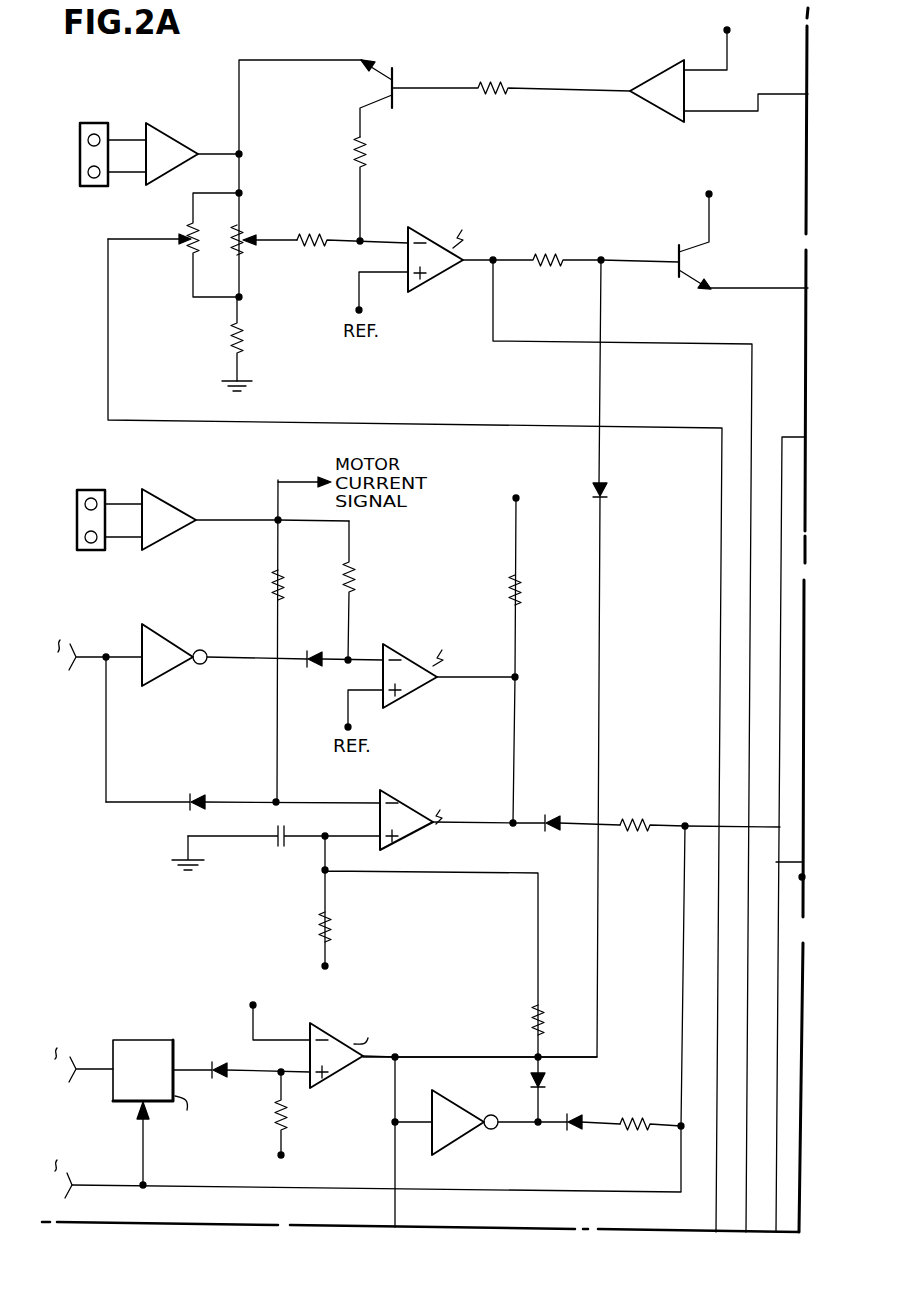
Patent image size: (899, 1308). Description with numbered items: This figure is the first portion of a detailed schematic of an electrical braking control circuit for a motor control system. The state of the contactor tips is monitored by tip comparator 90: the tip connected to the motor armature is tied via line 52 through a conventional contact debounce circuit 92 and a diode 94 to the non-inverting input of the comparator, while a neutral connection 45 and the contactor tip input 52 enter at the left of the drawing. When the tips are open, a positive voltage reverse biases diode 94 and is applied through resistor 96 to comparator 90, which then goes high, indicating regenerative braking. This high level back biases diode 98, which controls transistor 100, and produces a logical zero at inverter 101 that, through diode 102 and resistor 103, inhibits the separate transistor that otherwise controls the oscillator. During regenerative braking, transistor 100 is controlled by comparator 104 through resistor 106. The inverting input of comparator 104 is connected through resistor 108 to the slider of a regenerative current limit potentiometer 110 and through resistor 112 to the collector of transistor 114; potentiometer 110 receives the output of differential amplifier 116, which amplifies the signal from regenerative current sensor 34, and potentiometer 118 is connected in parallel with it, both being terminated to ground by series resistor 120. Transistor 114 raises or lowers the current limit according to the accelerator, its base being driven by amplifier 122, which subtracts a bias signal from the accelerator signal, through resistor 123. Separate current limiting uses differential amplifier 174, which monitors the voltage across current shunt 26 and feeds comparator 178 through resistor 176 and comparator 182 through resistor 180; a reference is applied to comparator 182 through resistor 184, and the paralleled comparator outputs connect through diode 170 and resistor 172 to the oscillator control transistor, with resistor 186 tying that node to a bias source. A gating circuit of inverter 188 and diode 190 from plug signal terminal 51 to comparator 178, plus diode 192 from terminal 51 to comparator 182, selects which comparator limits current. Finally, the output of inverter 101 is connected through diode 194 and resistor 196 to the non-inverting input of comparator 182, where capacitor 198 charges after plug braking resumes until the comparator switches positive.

The regenerative current sensor 34 is at (97, 122).
The differential amplifier 116 is at (176, 127).
The transistor 114 is at (390, 61).
The resistor 123 is at (498, 60).
The amplifier 122 is at (670, 64).
The resistor 112 is at (347, 148).
The regenerative current limit potentiometer 110 is at (250, 227).
The potentiometer 118 is at (176, 252).
The resistor 108 is at (308, 250).
The series resistor 120 is at (222, 340).
The comparator 104 is at (433, 285).
The resistor 106 is at (555, 252).
The transistor 100 is at (704, 260).
The diode 98 is at (611, 490).
The current shunt 26 is at (85, 488).
The differential amplifier 174 is at (178, 502).
The second resistor 180 is at (268, 584).
The resistor 176 is at (362, 580).
The resistor 186 is at (505, 586).
The inverter 188 is at (170, 638).
The plug signal terminal 51 is at (82, 667).
The diode 190 is at (310, 671).
The comparator 178 is at (418, 700).
The diode 192 is at (194, 793).
The capacitor 198 is at (276, 849).
The comparator 182 is at (418, 836).
The resistor 184 is at (340, 934).
The diode 170 is at (551, 813).
The resistor 172 is at (635, 813).
The contact debounce circuit 92 is at (173, 1040).
The line 52 is at (84, 1080).
The diode 94 is at (215, 1062).
The resistor 96 is at (296, 1118).
The neutral input 45 is at (113, 1187).
The tip comparator 90 is at (352, 1070).
The resistor 196 is at (528, 1021).
The diode 194 is at (528, 1078).
The inverter 101 is at (470, 1145).
The diode 102 is at (574, 1136).
The resistor 103 is at (637, 1136).